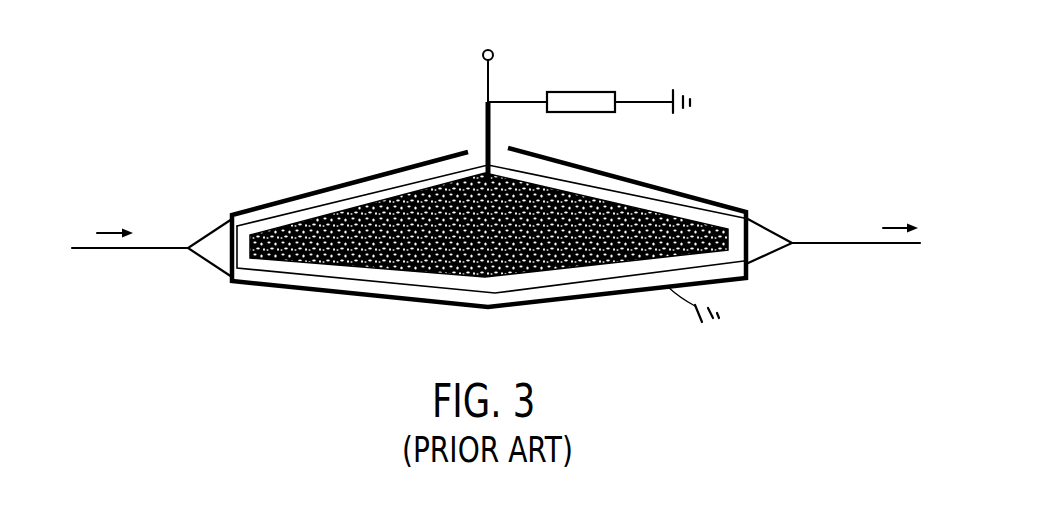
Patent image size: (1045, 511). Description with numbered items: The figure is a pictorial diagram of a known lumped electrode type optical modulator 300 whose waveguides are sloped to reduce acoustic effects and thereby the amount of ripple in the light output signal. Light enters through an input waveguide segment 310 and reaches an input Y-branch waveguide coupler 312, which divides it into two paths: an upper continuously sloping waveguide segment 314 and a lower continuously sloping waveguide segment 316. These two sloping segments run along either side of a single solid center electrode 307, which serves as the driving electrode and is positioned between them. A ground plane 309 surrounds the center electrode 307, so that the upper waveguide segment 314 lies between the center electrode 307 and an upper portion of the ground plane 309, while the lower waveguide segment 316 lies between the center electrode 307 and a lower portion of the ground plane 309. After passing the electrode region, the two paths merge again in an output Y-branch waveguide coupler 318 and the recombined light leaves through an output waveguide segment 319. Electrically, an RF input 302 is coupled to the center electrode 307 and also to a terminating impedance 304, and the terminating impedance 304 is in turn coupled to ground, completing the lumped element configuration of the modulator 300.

The optical modulator 300 is at (381, 111).
The RF input 302 is at (494, 49).
The terminating impedance 304 is at (580, 92).
The solid center electrode 307 is at (577, 193).
The ground plane 309 is at (327, 292).
The input waveguide segment 310 is at (103, 250).
The input Y-branch waveguide coupler 312 is at (188, 253).
The upper continuously sloping waveguide segment 314 is at (290, 206).
The lower continuously sloping waveguide segment 316 is at (272, 273).
The output Y-branch waveguide coupler 318 is at (790, 245).
The output waveguide segment 319 is at (883, 247).